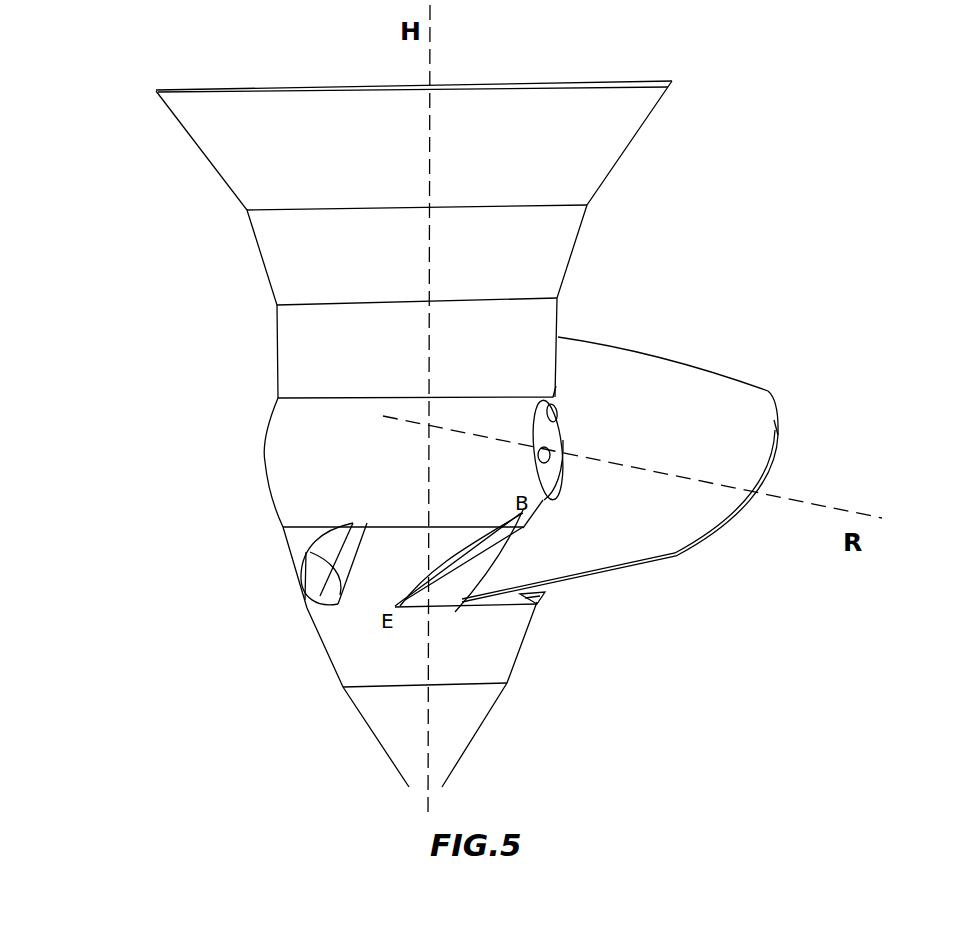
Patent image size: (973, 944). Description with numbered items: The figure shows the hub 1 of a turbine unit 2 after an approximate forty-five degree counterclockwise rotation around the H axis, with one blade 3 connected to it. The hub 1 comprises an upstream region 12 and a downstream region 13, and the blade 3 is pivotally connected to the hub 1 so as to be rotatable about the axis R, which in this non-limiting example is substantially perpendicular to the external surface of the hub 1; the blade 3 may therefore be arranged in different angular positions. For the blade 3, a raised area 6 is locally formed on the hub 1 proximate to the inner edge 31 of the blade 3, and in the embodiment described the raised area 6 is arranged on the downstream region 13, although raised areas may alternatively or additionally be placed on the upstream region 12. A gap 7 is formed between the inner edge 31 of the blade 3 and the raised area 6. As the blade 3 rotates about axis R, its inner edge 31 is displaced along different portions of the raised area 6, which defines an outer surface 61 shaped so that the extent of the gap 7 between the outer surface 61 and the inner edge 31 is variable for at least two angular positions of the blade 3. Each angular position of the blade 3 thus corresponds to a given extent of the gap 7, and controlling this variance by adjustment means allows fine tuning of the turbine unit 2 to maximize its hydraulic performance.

The hub 1 is at (297, 315).
The turbine unit 2 is at (781, 171).
The blade 3 is at (645, 530).
The raised area 6 is at (400, 587).
The gap 7 is at (487, 572).
The upstream region 12 is at (504, 261).
The downstream region 13 is at (491, 668).
The inner edge 31 is at (460, 607).
The outer surface 61 is at (453, 587).